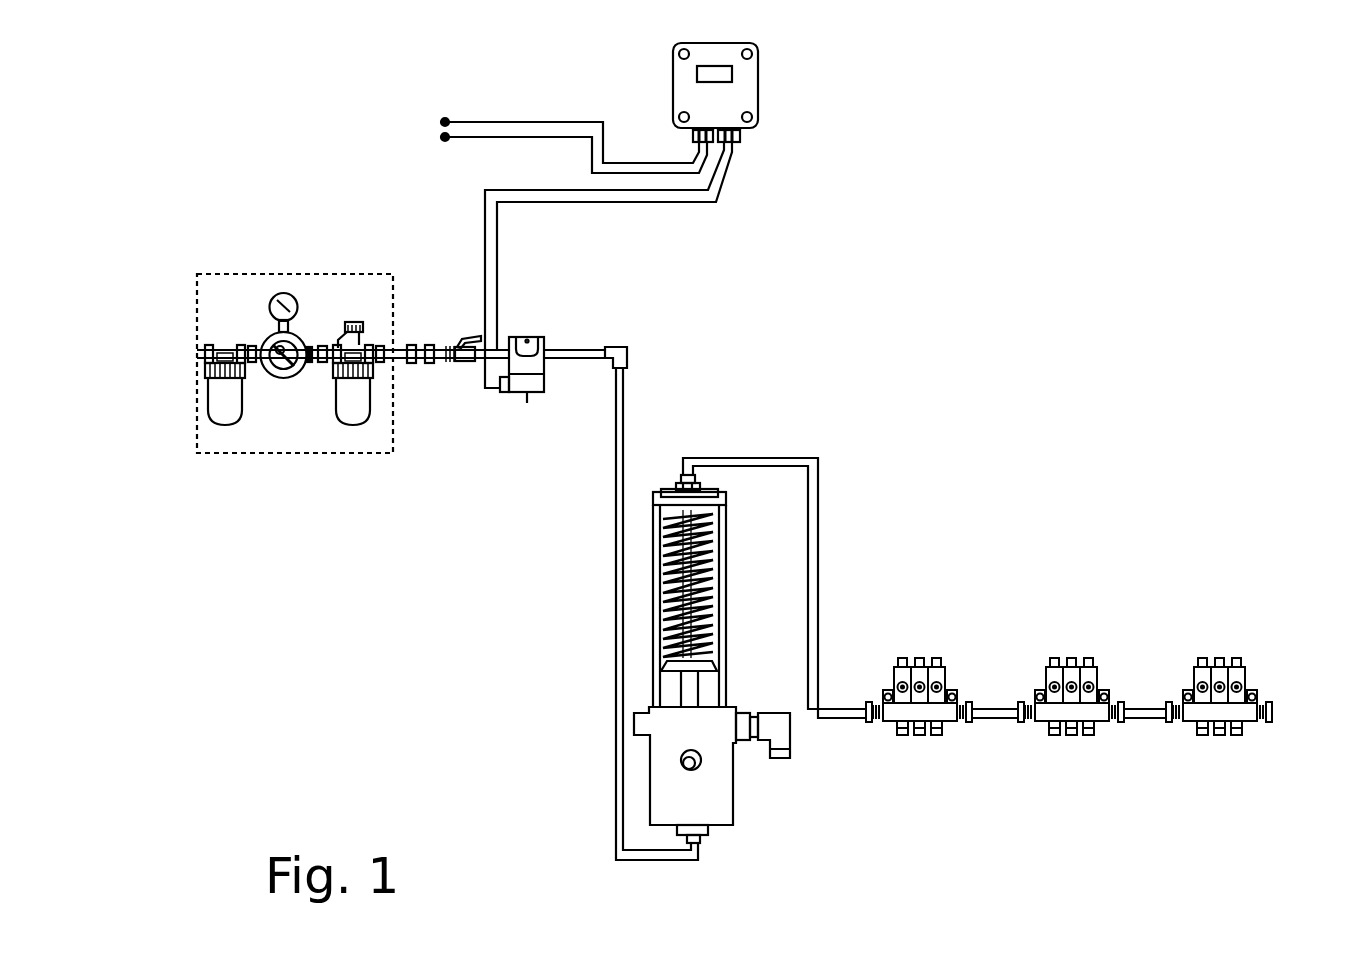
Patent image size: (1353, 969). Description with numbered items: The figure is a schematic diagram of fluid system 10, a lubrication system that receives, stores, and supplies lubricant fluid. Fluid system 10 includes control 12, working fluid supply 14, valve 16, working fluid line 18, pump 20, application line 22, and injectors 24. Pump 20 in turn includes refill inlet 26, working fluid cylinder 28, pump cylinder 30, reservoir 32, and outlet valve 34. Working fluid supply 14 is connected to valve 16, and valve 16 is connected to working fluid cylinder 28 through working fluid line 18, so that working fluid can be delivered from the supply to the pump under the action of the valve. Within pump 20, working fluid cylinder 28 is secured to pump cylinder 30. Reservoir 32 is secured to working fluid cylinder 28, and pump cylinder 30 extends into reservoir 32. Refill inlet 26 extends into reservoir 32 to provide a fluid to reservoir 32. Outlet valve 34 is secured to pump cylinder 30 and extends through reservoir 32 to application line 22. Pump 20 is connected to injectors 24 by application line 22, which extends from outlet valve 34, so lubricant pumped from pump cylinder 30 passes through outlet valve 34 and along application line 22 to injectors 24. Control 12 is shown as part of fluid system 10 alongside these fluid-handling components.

The fluid system 10 is at (993, 283).
The control 12 is at (748, 76).
The working fluid supply 14 is at (312, 273).
The valve 16 is at (528, 393).
The working fluid line 18 is at (616, 531).
The pump 20 is at (717, 596).
The application line 22 is at (818, 536).
The injectors 24 is at (1200, 737).
The refill inlet 26 is at (702, 753).
The working fluid cylinder 28 is at (722, 810).
The pump cylinder 30 is at (692, 692).
The reservoir 32 is at (723, 605).
The outlet valve 34 is at (700, 560).